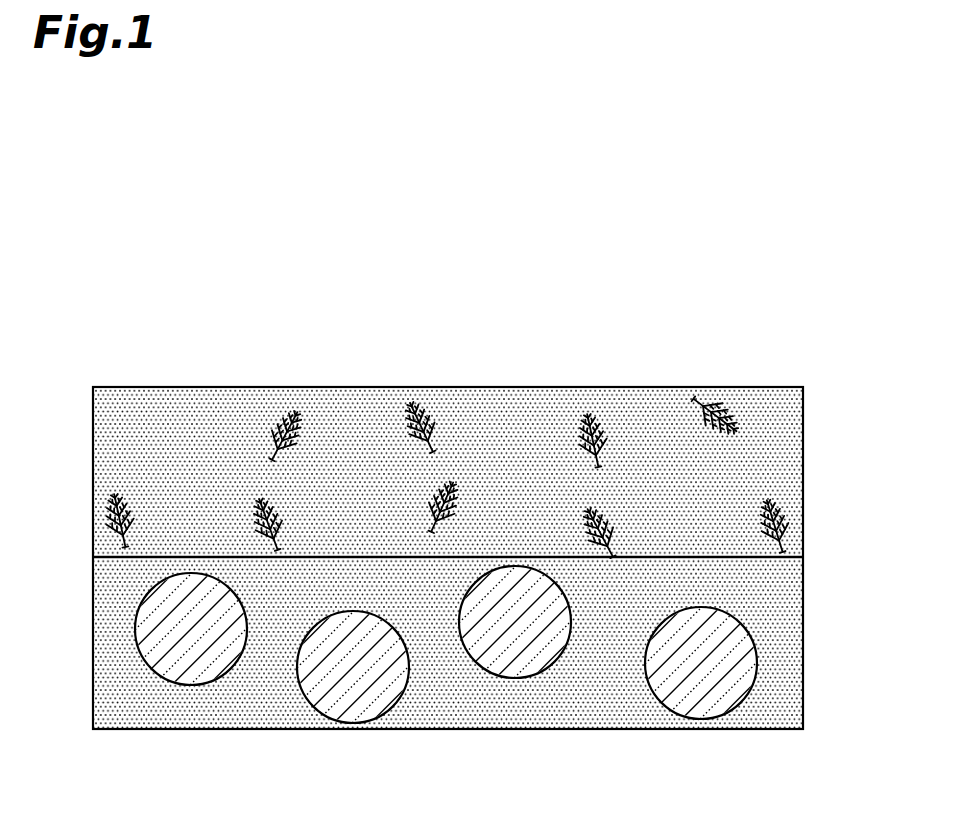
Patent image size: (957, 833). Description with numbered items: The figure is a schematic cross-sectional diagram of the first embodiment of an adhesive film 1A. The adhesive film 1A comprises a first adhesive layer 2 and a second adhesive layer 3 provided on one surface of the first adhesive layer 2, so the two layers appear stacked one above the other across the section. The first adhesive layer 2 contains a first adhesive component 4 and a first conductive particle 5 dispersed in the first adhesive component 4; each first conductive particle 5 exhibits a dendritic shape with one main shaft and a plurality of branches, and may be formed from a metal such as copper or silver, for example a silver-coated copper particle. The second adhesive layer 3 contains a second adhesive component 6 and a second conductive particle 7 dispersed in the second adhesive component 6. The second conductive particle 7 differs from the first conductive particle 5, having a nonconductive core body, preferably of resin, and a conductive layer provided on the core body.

The adhesive film 1A is at (742, 291).
The first adhesive layer 2 is at (493, 452).
The second adhesive layer 3 is at (493, 661).
The first adhesive component 4 is at (788, 467).
The first conductive particle 5 is at (122, 497).
The second adhesive component 6 is at (788, 632).
The second conductive particle 7 is at (190, 670).